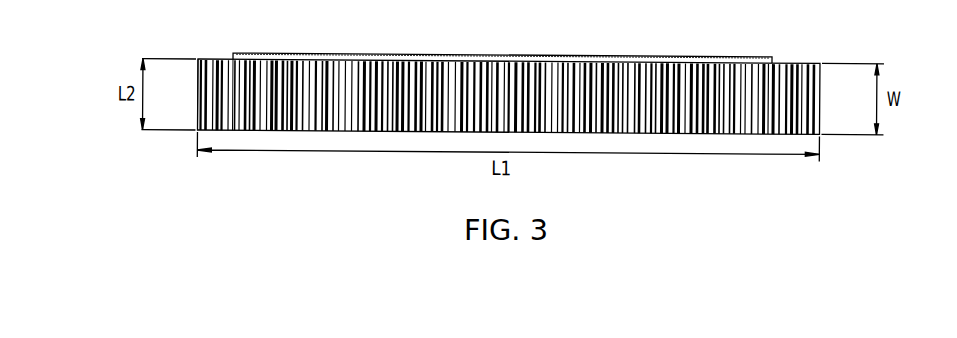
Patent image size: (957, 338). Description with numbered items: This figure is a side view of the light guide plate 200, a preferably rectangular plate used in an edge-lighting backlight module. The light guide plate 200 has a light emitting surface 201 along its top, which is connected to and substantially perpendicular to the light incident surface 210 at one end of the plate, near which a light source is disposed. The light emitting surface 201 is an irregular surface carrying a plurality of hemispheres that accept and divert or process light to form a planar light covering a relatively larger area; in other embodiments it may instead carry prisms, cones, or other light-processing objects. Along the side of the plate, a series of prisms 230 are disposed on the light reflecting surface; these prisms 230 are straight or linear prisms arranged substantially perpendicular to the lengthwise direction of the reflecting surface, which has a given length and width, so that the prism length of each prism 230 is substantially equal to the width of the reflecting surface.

The light guide plate 200 is at (213, 29).
The light emitting surface 201 is at (587, 62).
The light incident surface 210 is at (198, 70).
The prisms 230 is at (425, 73).